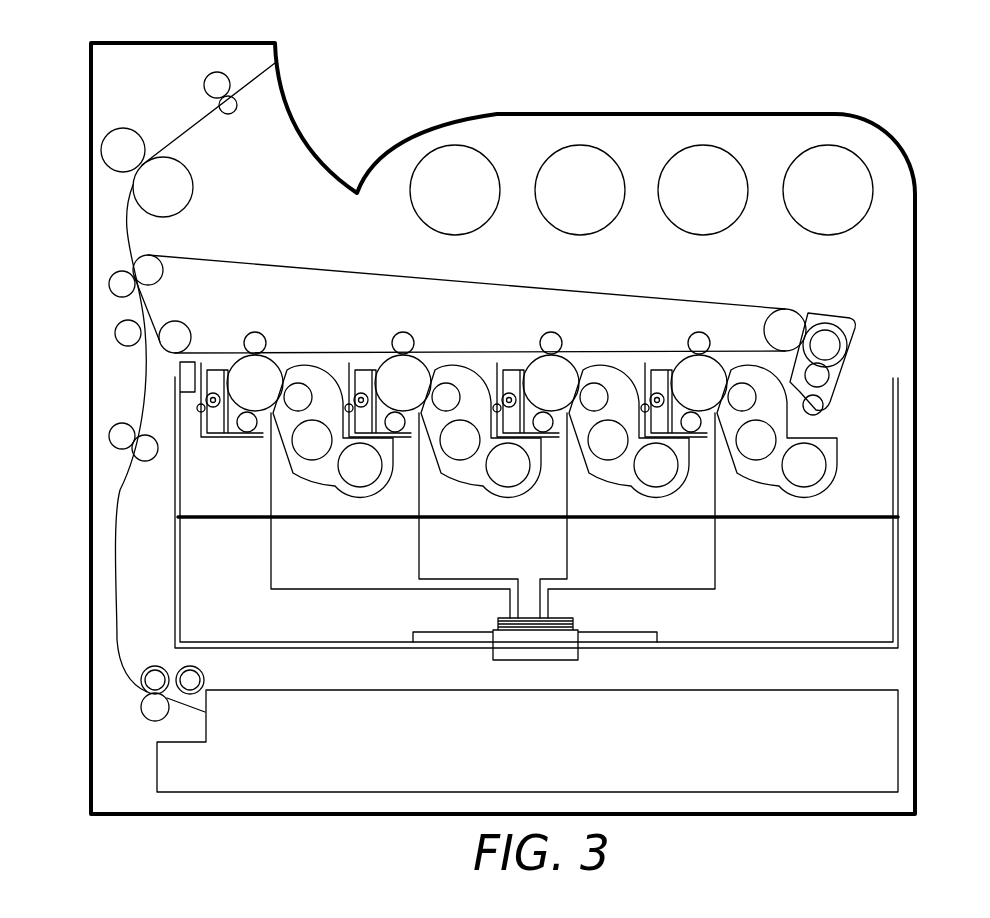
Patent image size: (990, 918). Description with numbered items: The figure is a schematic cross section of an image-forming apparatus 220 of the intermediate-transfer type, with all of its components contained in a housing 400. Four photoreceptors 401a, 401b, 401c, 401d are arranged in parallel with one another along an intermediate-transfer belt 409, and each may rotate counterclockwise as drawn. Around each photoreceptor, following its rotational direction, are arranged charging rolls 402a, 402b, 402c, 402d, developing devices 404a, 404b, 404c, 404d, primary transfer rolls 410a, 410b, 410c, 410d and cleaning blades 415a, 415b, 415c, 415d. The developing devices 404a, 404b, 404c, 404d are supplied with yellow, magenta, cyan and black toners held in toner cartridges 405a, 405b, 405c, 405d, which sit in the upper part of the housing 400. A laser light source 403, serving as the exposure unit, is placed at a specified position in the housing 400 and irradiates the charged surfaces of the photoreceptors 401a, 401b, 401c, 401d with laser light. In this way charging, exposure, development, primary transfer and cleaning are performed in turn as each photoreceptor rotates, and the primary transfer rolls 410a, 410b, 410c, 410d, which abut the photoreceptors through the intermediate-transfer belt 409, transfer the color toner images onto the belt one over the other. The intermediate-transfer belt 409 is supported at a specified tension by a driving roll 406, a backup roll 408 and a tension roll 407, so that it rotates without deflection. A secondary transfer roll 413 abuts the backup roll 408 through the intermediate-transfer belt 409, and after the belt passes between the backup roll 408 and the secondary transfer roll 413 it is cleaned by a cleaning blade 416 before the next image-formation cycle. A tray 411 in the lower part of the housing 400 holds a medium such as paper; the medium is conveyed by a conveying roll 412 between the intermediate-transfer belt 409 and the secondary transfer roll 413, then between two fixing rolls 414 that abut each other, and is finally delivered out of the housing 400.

The image-forming apparatus 220 is at (857, 81).
The housing 400 is at (916, 302).
The photoreceptor 401a is at (714, 364).
The photoreceptor 401b is at (566, 364).
The photoreceptor 401c is at (418, 364).
The photoreceptor 401d is at (270, 364).
The charging roll 402a is at (653, 437).
The charging roll 402b is at (505, 437).
The charging roll 402c is at (357, 437).
The charging roll 402d is at (211, 437).
The laser light source 403 is at (553, 618).
The developing device 404a is at (742, 475).
The developing device 404b is at (594, 475).
The developing device 404c is at (446, 475).
The developing device 404d is at (298, 475).
The toner cartridge 405a is at (832, 145).
The toner cartridge 405b is at (715, 146).
The toner cartridge 405c is at (591, 146).
The toner cartridge 405d is at (467, 146).
The driving roll 406 is at (787, 309).
The tension roll 407 is at (167, 323).
The backup roll 408 is at (135, 258).
The intermediate-transfer belt 409 is at (252, 262).
The primary transfer roll 410a is at (701, 332).
The primary transfer roll 410b is at (554, 332).
The primary transfer roll 410c is at (406, 332).
The primary transfer roll 410d is at (258, 332).
The tray 411 is at (800, 690).
The conveying roll 412 is at (215, 104).
The secondary transfer roll 413 is at (110, 283).
The fixing rolls 414 is at (132, 197).
The cleaning blade 415a is at (661, 393).
The cleaning blade 415b is at (513, 393).
The cleaning blade 415c is at (365, 393).
The cleaning blade 415d is at (217, 393).
The cleaning blade 416 is at (830, 393).